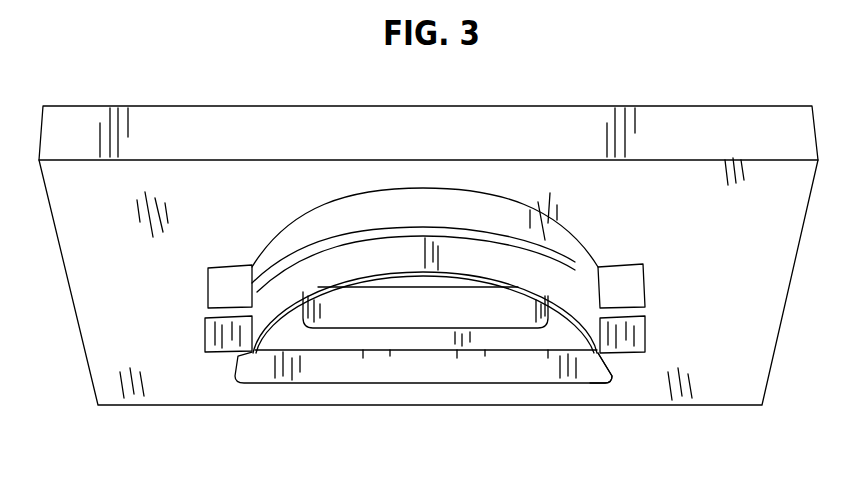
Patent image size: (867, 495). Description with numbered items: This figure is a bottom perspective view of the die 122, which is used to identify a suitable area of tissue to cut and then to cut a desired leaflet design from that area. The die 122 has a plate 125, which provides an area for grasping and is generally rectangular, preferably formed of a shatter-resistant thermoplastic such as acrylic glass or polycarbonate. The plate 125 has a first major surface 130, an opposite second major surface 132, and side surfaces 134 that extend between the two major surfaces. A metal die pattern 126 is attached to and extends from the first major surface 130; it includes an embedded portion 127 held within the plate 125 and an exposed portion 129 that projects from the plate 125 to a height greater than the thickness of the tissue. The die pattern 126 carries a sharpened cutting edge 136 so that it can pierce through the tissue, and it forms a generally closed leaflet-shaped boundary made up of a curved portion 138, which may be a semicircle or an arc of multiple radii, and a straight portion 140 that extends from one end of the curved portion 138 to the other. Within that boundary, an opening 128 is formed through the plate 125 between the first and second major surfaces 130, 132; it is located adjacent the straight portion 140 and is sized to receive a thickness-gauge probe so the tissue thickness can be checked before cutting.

The die 122 is at (171, 70).
The plate 125 is at (138, 107).
The die pattern 126 is at (278, 354).
The embedded portion 127 is at (485, 218).
The opening 128 is at (427, 272).
The exposed portion 129 is at (552, 277).
The first major surface 130 is at (615, 107).
The second major surface 132 is at (737, 295).
The side surfaces 134 is at (338, 130).
The sharpened cutting edge 136 is at (333, 385).
The curved portion 138 is at (357, 270).
The straight portion 140 is at (595, 381).